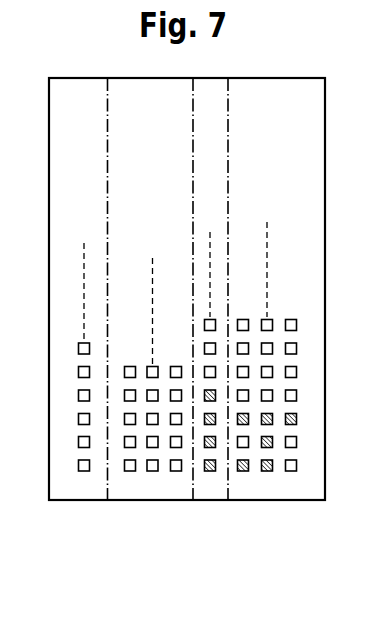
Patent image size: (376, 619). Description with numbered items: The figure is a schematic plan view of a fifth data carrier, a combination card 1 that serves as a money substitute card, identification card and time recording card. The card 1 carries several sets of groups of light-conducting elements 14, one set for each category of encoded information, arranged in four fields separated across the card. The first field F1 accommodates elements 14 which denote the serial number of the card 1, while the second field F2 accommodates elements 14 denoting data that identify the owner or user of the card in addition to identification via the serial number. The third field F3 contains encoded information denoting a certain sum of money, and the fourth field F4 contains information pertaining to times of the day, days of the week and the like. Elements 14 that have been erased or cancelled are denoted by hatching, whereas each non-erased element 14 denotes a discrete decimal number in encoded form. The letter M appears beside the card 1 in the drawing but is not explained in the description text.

The card 1 is at (266, 78).
The light-conducting elements 14 is at (78, 349).
The first field F1 is at (79, 489).
The second field F2 is at (151, 489).
The third field F3 is at (211, 489).
The fourth field F4 is at (273, 489).
The matrix M is at (369, 434).